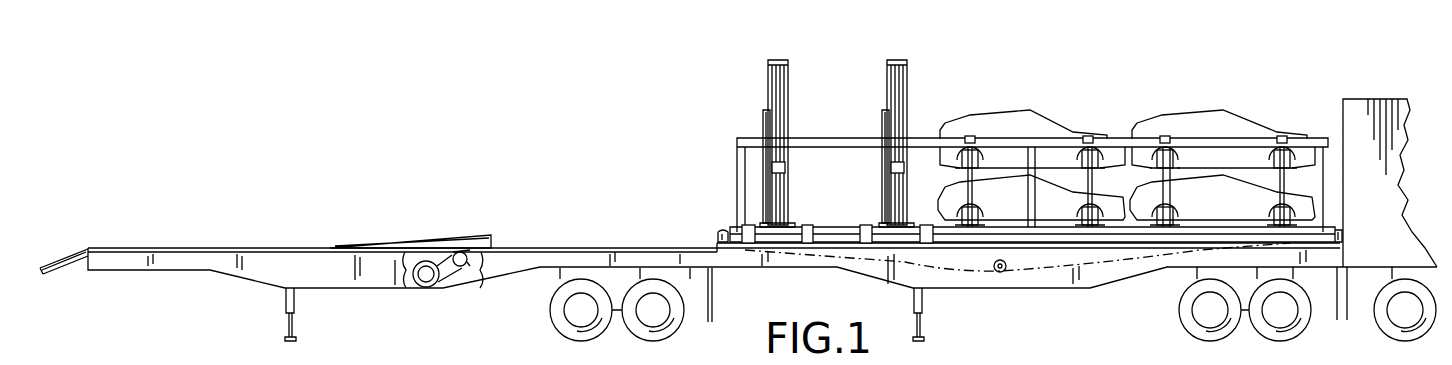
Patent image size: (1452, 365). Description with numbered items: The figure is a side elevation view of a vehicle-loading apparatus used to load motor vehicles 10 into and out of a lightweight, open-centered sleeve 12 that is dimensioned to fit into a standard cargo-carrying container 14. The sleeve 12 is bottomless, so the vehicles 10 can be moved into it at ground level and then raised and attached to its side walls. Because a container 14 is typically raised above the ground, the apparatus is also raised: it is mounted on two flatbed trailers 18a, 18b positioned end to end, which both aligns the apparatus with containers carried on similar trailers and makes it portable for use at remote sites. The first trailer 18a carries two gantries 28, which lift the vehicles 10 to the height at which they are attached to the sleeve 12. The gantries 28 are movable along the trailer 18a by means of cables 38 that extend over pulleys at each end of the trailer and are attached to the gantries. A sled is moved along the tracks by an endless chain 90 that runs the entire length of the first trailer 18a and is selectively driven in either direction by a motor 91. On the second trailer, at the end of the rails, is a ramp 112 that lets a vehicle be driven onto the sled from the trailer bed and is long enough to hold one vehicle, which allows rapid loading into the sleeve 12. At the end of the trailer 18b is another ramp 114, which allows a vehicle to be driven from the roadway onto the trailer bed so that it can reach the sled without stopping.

The motor vehicles 10 is at (1043, 197).
The sleeve 12 is at (753, 138).
The cargo-carrying container 14 is at (1390, 201).
The flatbed trailer 18a is at (1115, 273).
The flatbed trailer 18b is at (405, 282).
The gantries 28 is at (870, 105).
The cables 38 is at (990, 282).
The endless chain 90 is at (467, 283).
The motor 91 is at (442, 288).
The ramp 112 is at (467, 236).
The ramp 114 is at (72, 252).